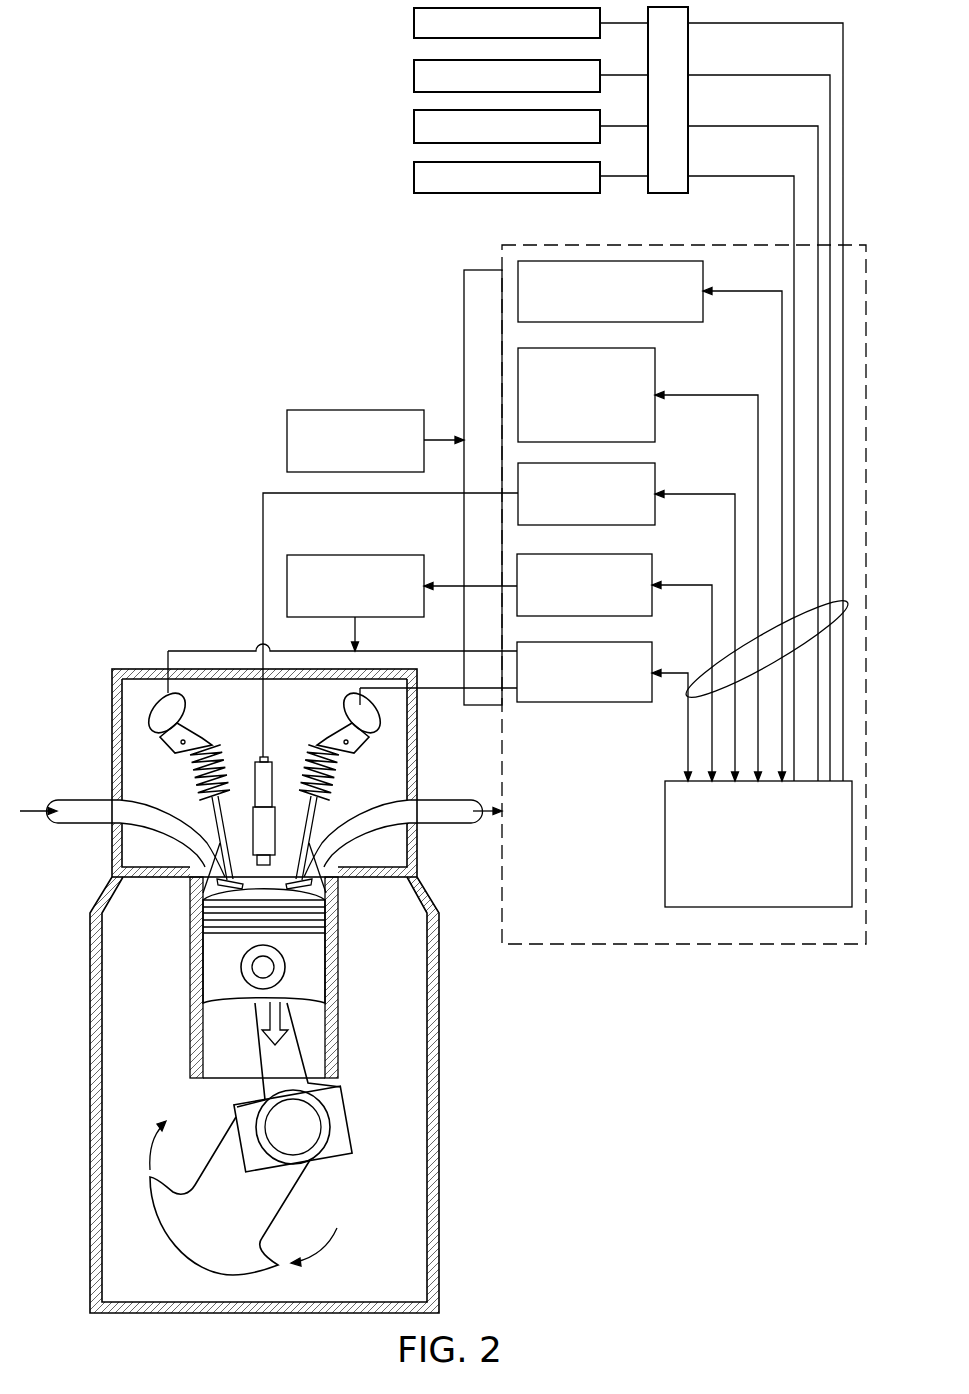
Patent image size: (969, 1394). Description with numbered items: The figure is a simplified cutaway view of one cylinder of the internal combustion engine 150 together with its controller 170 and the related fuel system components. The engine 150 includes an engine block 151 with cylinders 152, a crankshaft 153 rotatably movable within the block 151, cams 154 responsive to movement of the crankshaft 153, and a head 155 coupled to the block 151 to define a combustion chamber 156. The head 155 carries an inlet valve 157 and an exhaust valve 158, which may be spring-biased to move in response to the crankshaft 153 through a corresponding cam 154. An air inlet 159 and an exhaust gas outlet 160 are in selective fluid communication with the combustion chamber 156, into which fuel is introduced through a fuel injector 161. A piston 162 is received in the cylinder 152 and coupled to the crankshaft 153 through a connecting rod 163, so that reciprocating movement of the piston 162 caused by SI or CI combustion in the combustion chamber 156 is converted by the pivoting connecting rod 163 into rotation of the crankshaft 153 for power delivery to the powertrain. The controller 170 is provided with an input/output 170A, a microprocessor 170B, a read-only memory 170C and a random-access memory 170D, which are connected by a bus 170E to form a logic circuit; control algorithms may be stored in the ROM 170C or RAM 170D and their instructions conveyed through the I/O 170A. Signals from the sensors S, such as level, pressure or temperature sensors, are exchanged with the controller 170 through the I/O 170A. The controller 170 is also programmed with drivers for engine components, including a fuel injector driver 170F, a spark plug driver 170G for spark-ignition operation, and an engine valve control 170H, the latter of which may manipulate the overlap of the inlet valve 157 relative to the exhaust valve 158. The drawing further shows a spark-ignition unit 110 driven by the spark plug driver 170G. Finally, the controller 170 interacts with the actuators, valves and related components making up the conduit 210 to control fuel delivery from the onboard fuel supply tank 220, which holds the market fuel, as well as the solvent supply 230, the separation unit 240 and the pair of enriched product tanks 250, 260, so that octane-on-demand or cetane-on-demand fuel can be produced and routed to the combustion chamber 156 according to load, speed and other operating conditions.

The solvent supply 230 is at (412, 22).
The enriched product tank 250 is at (436, 84).
The enriched product tank 260 is at (412, 74).
The onboard fuel supply tank 220 is at (412, 121).
The separation unit 240 is at (412, 173).
The conduit 210 is at (648, 190).
The controller 170 is at (702, 246).
The input/output 170A is at (478, 270).
The microprocessor 170B is at (665, 846).
The read-only memory 170C is at (705, 282).
The random-access memory 170D is at (655, 362).
The bus 170E is at (848, 604).
The fuel injector driver 170F is at (655, 480).
The spark plug driver 170G is at (652, 569).
The engine valve control 170H is at (587, 702).
The sensors S is at (352, 410).
The spark ignition system 110 is at (352, 555).
The internal combustion engine 150 is at (85, 968).
The engine block 151 is at (440, 1245).
The cylinder 152 is at (190, 926).
The crankshaft 153 is at (300, 1190).
The cam 154 is at (145, 718).
The head 155 is at (125, 669).
The combustion chamber 156 is at (303, 893).
The inlet valve 157 is at (213, 748).
The exhaust valve 158 is at (310, 748).
The air inlet 159 is at (75, 825).
The exhaust gas outlet 160 is at (447, 825).
The fuel injector 161 is at (255, 790).
The piston 162 is at (308, 968).
The connecting rod 163 is at (300, 1068).